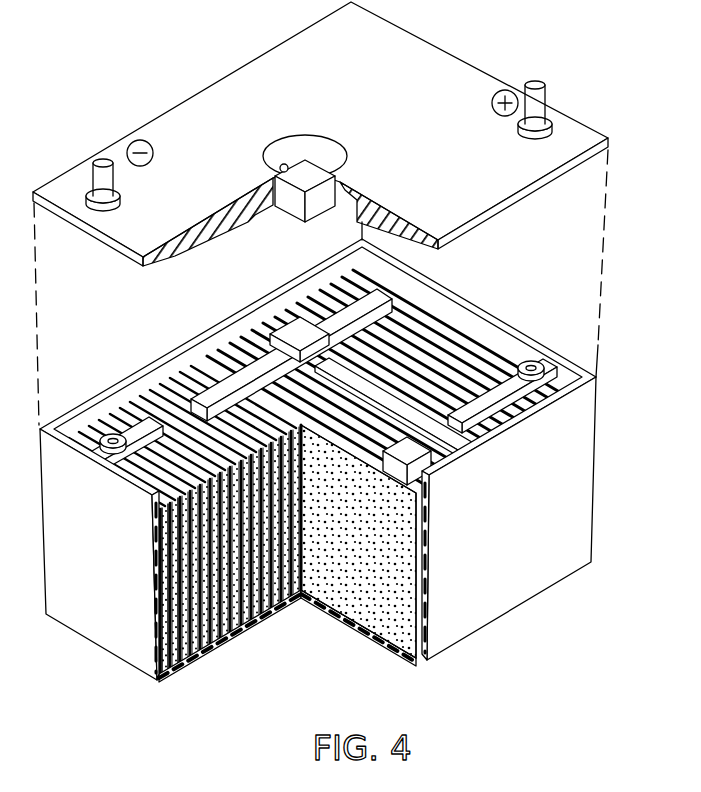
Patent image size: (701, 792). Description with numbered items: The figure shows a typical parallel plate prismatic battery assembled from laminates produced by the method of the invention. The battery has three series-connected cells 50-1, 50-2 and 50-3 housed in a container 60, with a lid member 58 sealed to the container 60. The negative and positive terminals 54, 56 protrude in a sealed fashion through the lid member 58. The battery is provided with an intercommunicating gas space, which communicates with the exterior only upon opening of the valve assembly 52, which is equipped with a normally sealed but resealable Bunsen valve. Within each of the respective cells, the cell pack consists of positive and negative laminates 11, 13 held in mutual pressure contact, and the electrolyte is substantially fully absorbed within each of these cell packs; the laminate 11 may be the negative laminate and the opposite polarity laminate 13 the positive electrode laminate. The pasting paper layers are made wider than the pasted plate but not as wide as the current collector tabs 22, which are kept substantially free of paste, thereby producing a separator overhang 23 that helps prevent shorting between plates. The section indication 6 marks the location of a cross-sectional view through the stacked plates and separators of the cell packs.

The lid member 58 is at (432, 44).
The positive terminal 56 is at (541, 82).
The negative terminal 54 is at (115, 181).
The valve assembly 52 is at (328, 155).
The container 60 is at (559, 561).
The cell 50-1 is at (187, 658).
The cell 50-2 is at (284, 550).
The cell 50-3 is at (490, 336).
The current collector tab 22 is at (143, 435).
The separator overhang 23 is at (168, 508).
The laminate 11 is at (155, 675).
The opposite polarity laminate 13 is at (175, 668).
The section line 6 is at (193, 648).